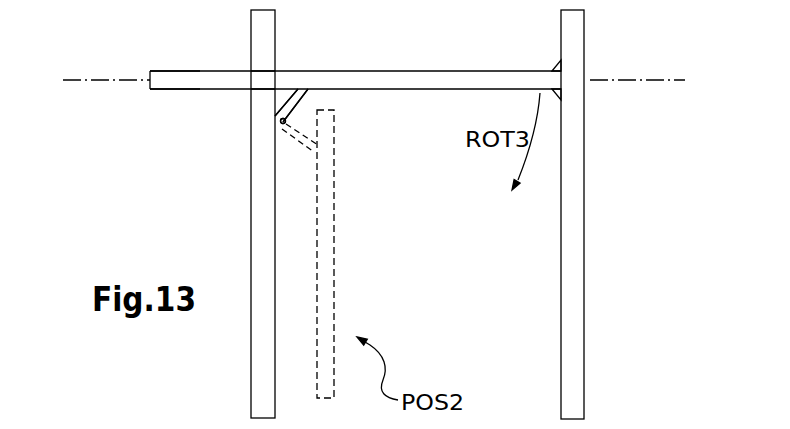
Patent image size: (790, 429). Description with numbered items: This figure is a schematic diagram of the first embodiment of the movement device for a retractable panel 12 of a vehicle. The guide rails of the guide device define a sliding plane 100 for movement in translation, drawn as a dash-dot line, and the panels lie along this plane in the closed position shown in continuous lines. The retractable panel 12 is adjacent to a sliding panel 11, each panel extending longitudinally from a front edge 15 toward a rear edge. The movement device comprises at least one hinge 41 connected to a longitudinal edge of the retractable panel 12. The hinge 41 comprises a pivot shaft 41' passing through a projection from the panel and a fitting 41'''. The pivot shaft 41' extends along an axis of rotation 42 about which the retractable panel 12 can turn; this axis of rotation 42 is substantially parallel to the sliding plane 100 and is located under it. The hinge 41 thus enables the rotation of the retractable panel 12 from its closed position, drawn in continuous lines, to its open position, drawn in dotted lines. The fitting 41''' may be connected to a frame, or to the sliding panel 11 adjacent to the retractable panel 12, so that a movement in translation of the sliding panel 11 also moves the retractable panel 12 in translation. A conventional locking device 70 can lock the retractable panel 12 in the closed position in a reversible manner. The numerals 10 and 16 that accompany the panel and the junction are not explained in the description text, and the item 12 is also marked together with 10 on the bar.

The bar 10 is at (355, 59).
The retractable panel 12 is at (373, 71).
The sliding panel 11 is at (198, 71).
The junction of bar and post 16 is at (275, 71).
The front edge 15 is at (562, 79).
The locking device 70 is at (561, 90).
The sliding plane 100 is at (660, 80).
The hinge 41 is at (331, 243).
The pivot shaft 41' is at (226, 115).
The axis of rotation 42 is at (283, 122).
The fitting 41''' is at (251, 159).